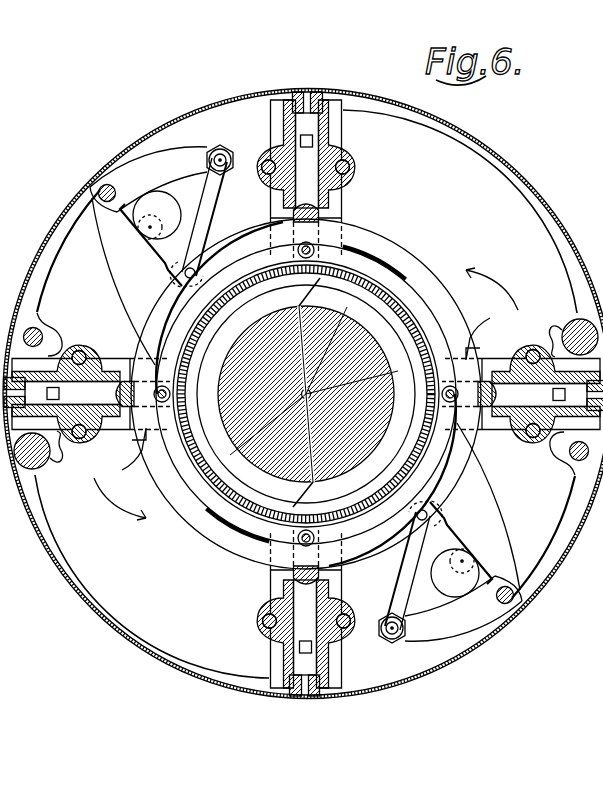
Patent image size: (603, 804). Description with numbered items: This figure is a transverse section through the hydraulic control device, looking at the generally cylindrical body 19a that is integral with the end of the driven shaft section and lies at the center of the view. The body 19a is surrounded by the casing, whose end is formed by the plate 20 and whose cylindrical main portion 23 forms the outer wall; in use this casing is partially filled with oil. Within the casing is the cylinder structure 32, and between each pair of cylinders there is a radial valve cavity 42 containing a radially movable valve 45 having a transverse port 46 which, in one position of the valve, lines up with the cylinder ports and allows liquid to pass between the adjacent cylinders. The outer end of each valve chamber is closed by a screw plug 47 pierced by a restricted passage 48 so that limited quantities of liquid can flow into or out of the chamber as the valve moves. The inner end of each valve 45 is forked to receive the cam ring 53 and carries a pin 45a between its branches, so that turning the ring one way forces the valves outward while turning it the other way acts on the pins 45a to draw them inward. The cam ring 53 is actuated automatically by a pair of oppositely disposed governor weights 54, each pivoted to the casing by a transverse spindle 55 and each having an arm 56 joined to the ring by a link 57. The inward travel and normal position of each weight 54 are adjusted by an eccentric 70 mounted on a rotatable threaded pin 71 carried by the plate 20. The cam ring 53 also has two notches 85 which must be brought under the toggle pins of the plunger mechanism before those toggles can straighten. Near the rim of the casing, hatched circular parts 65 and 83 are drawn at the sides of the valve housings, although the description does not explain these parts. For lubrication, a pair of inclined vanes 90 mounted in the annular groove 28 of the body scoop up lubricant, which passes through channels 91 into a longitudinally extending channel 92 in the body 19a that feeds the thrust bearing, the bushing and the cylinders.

The cylindrical body 19a is at (232, 400).
The plate 20 is at (528, 200).
The cylindrical main portion 23 is at (176, 118).
The annular groove 28 is at (306, 394).
The cylinder structure 32 is at (407, 307).
The radial valve cavity 42 is at (308, 121).
The radially movable valve 45 is at (309, 181).
The pin 45a is at (318, 245).
The transverse port 46 is at (313, 143).
The screw plug 47 is at (318, 94).
The restricted passage 48 is at (297, 94).
The cam ring 53 is at (392, 245).
The governor weight 54 is at (112, 265).
The transverse spindle 55 is at (102, 186).
The arm 56 is at (306, 394).
The link 57 is at (212, 209).
The pin 65 is at (578, 460).
The eccentric 70 is at (151, 203).
The rotatable threaded pin 71 is at (310, 399).
The pin 83 is at (570, 326).
The notch 85 is at (306, 394).
The inclined vane 90 is at (311, 300).
The channel 91 is at (345, 312).
The longitudinally extending channel 92 is at (360, 377).